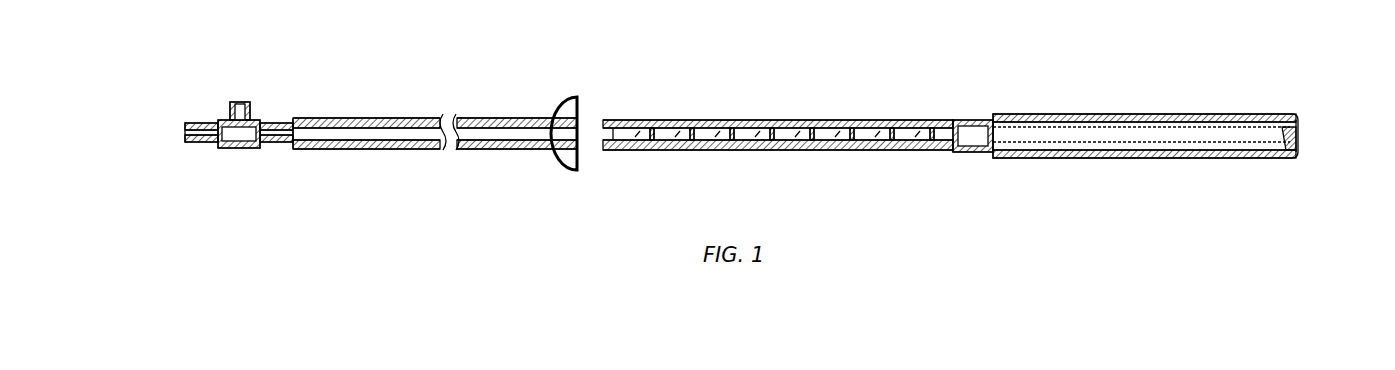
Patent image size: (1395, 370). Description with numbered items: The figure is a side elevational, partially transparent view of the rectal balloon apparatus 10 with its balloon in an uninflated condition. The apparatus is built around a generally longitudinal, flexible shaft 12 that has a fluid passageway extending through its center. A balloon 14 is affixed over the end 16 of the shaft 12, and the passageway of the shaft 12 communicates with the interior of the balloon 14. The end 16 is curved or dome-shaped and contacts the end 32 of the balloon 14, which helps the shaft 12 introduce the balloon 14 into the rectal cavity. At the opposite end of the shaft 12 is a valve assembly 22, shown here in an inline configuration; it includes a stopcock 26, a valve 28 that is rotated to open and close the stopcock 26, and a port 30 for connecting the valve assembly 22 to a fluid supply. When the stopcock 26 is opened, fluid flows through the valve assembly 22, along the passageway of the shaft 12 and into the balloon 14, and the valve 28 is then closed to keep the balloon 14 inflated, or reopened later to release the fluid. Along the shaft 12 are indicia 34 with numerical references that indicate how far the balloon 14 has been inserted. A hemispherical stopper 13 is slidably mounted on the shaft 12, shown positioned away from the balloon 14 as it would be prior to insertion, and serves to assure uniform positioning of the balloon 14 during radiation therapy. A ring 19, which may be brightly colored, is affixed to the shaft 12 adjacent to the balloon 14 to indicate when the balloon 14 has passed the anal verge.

The rectal balloon apparatus 10 is at (970, 66).
The shaft 12 is at (540, 119).
The stopper 13 is at (587, 96).
The balloon 14 is at (1232, 116).
The end of the shaft 16 is at (1298, 155).
The ring 19 is at (972, 153).
The valve assembly 22 is at (250, 102).
The stopcock 26 is at (245, 150).
The valve 28 is at (230, 103).
The port 30 is at (205, 143).
The end of the balloon 32 is at (1300, 133).
The indicia 34 is at (688, 120).